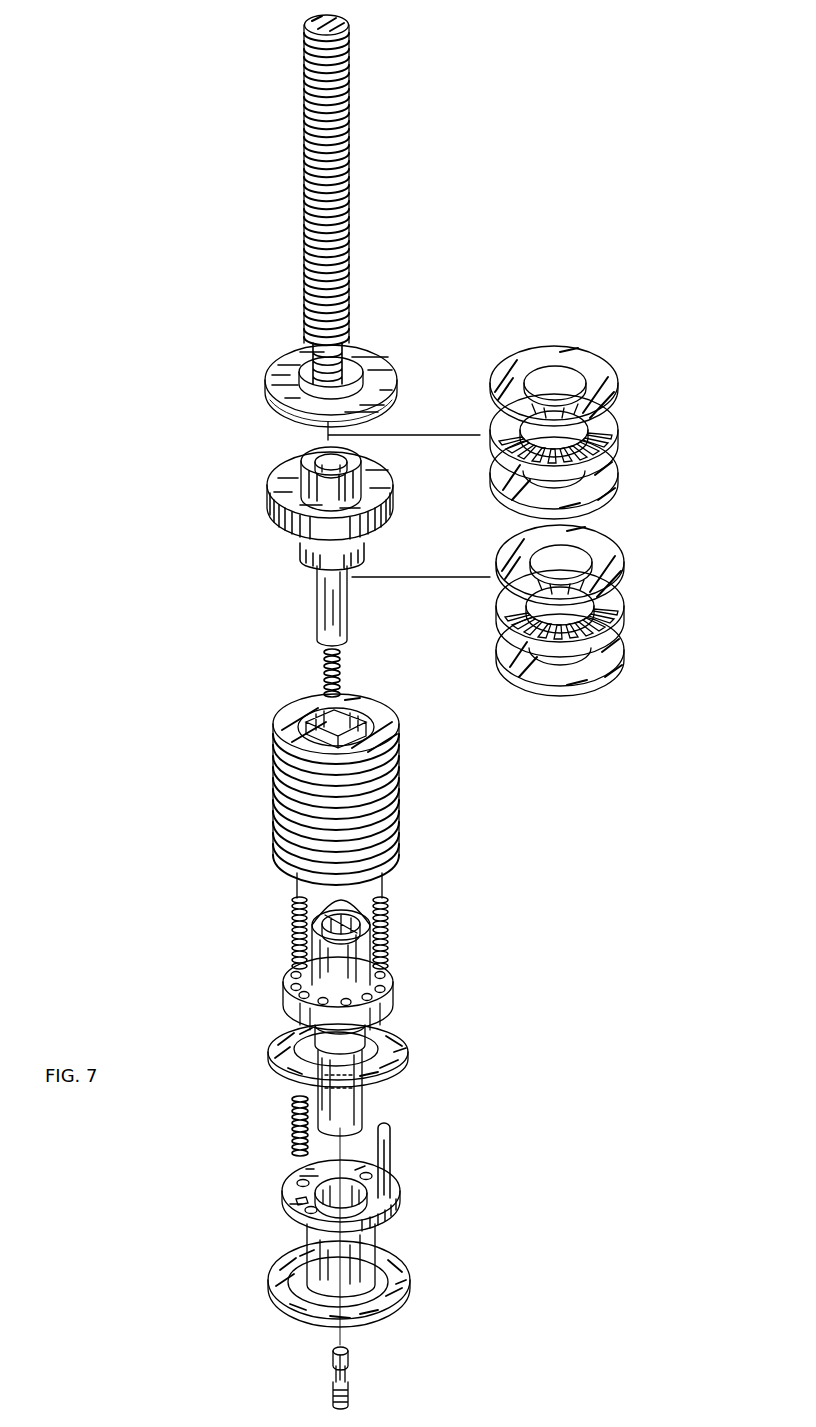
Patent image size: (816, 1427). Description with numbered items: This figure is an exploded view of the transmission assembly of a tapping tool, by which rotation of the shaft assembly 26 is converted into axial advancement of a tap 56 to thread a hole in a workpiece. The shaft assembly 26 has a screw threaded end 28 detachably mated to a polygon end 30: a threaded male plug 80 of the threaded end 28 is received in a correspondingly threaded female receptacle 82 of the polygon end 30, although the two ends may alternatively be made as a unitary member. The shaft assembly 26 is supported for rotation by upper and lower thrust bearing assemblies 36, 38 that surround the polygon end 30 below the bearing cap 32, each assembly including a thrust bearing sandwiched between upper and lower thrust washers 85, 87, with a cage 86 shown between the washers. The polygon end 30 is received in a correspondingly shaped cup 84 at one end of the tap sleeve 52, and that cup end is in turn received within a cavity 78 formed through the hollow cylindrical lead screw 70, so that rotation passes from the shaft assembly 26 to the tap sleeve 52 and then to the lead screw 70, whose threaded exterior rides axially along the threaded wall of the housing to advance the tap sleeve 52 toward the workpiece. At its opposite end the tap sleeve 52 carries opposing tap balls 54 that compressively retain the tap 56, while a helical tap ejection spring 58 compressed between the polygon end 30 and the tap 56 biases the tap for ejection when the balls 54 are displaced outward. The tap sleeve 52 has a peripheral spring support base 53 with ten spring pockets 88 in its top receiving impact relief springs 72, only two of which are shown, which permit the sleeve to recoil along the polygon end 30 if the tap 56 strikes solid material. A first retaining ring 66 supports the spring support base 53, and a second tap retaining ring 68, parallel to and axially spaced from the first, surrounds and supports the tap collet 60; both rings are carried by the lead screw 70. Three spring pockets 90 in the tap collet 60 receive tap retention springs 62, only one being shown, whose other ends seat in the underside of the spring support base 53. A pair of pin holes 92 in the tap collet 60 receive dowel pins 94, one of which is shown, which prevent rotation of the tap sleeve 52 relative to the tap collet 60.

The shaft assembly 26 is at (313, 491).
The screw threaded end 28 is at (304, 256).
The polygon end 30 is at (317, 606).
The bearing cap 32 is at (318, 379).
The upper thrust bearing assembly 36 is at (607, 327).
The lower thrust bearing assembly 38 is at (588, 706).
The tap sleeve 52 is at (335, 952).
The spring support base 53 is at (336, 993).
The tap balls 54 is at (297, 1086).
The tap 56 is at (347, 1385).
The tap ejection spring 58 is at (325, 682).
The tap collet 60 is at (338, 1213).
The tap retention spring 62 is at (290, 1135).
The first retaining ring 66 is at (275, 1066).
The second tap retaining ring 68 is at (410, 1285).
The lead screw 70 is at (348, 787).
The impact relief springs 72 is at (290, 946).
The cavity 78 is at (313, 714).
The threaded male plug 80 is at (356, 370).
The threaded female receptacle 82 is at (358, 460).
The cup 84 is at (368, 915).
The upper thrust washer 85 is at (612, 370).
The bearing cage 86 is at (618, 441).
The lower thrust washer 87 is at (618, 462).
The spring pockets 88 is at (298, 1010).
The spring pockets 90 is at (366, 1174).
The pin holes 92 is at (300, 1204).
The dowel pins 94 is at (392, 1153).